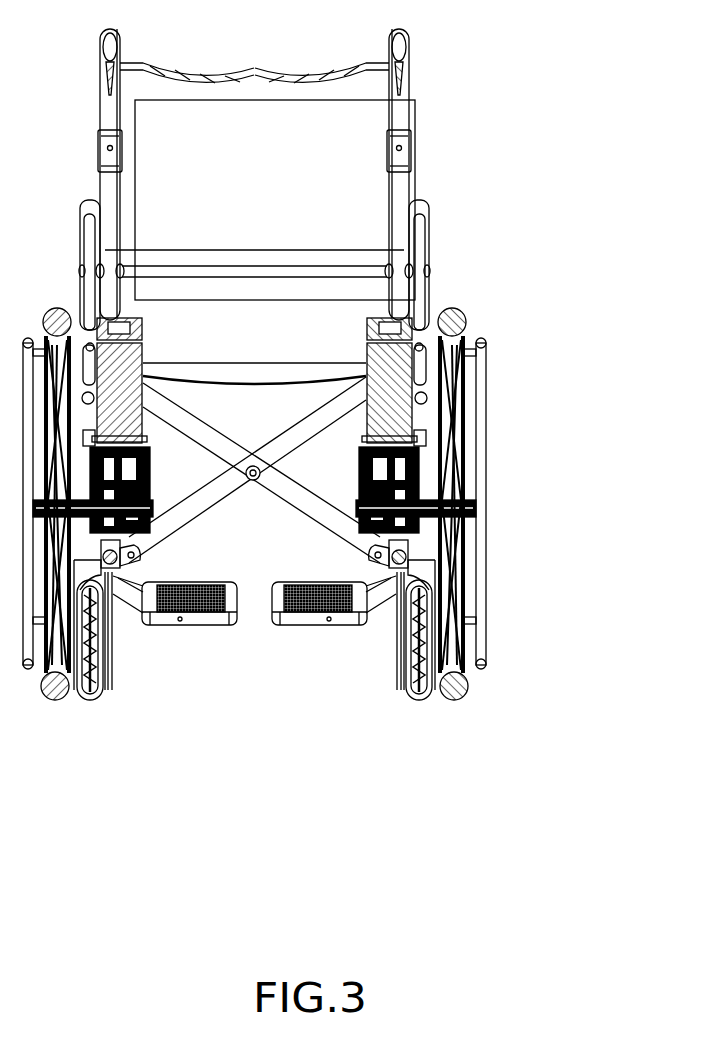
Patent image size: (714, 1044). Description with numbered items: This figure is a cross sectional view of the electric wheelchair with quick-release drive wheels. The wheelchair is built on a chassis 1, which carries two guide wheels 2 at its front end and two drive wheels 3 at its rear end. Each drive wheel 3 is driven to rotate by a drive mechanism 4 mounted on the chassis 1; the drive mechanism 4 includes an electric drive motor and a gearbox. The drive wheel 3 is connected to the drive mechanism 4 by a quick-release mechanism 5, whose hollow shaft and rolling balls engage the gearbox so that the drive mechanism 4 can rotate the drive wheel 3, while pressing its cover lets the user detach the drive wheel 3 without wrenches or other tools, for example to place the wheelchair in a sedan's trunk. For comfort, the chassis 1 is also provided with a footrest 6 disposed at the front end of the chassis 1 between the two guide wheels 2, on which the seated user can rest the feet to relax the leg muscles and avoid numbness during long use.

The chassis 1 is at (355, 201).
The guide wheels 2 is at (254, 692).
The drive wheels 3 is at (288, 566).
The drive mechanism 4 is at (254, 601).
The quick-release mechanism 5 is at (356, 425).
The footrest 6 is at (211, 700).